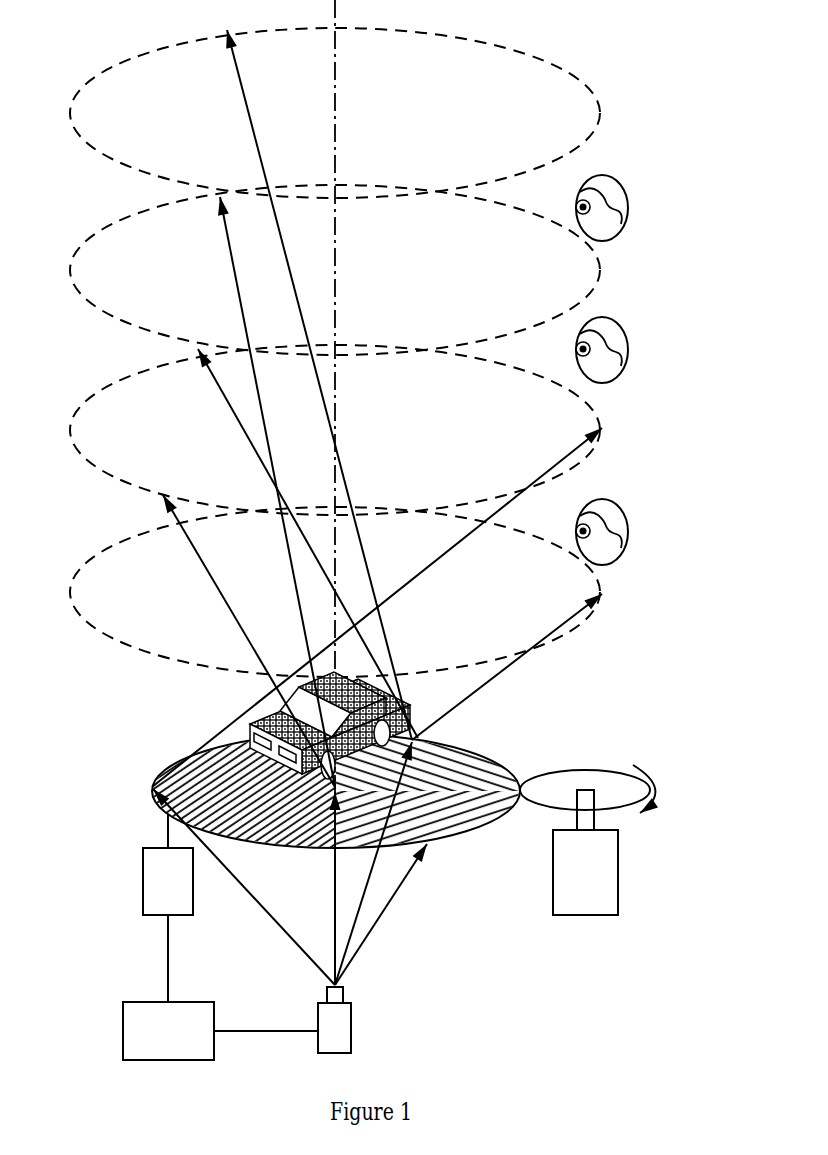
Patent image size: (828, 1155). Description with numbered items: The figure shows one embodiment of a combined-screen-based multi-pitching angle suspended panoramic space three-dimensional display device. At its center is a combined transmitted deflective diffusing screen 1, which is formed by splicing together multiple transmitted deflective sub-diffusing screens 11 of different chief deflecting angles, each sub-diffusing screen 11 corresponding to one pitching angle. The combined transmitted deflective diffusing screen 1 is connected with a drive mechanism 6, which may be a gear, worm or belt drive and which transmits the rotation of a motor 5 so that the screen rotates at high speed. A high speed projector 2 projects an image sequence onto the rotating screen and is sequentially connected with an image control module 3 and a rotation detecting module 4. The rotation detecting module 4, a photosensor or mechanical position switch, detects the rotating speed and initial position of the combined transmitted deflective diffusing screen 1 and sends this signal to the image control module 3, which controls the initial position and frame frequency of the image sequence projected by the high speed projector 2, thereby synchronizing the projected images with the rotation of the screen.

The combined transmitted deflective diffusing screen 1 is at (453, 830).
The transmitted deflective sub-diffusing screen 11 is at (467, 760).
The high speed projector 2 is at (351, 1023).
The image control module 3 is at (123, 1027).
The rotation detecting module 4 is at (143, 873).
The motor 5 is at (618, 890).
The drive mechanism 6 is at (612, 810).